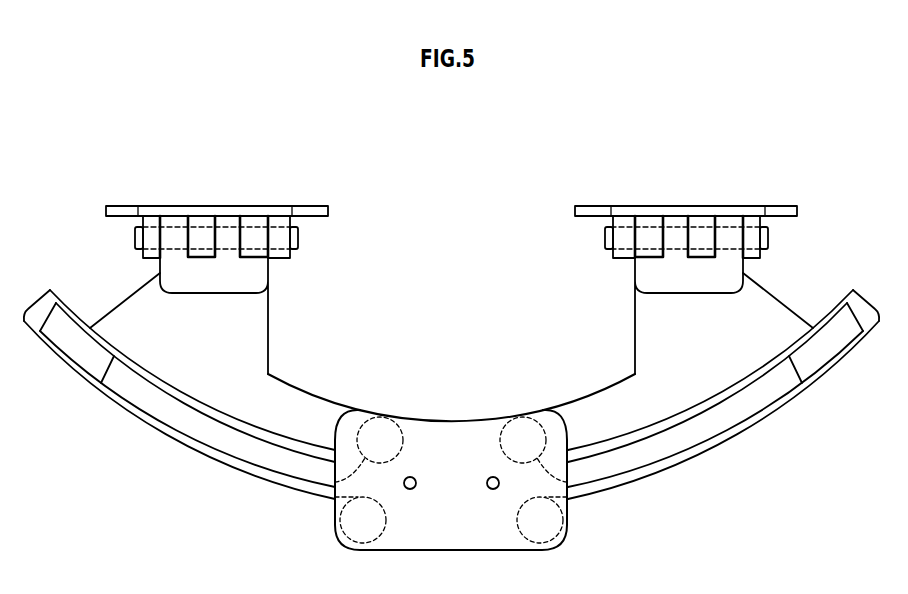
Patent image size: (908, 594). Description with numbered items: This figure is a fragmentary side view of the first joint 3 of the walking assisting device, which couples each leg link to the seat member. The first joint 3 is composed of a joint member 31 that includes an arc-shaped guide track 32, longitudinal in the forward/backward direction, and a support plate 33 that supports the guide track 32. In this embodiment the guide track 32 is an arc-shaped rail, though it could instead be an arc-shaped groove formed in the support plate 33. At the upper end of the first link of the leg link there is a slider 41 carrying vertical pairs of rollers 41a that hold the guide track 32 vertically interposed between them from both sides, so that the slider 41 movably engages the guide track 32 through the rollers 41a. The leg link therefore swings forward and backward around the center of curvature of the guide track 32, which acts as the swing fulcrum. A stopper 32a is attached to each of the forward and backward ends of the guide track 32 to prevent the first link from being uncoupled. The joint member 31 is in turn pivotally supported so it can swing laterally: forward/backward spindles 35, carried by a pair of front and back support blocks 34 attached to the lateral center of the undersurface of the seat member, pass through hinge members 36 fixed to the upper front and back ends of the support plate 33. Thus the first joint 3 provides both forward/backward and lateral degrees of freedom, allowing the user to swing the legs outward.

The first joint 3 is at (181, 262).
The joint member 31 is at (179, 401).
The guide track 32 is at (187, 423).
The stopper 32a is at (72, 343).
The support plate 33 is at (202, 377).
The support block 34 is at (160, 206).
The forward/backward spindle 35 is at (253, 218).
The hinge member 36 is at (207, 235).
The slider 41 is at (447, 433).
The roller 41a is at (333, 483).